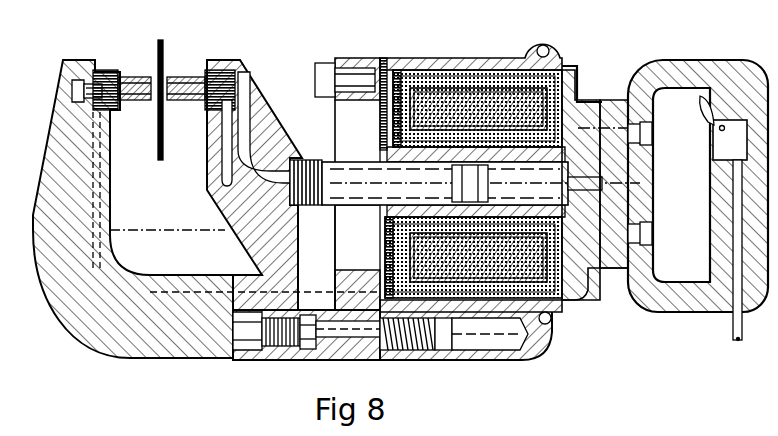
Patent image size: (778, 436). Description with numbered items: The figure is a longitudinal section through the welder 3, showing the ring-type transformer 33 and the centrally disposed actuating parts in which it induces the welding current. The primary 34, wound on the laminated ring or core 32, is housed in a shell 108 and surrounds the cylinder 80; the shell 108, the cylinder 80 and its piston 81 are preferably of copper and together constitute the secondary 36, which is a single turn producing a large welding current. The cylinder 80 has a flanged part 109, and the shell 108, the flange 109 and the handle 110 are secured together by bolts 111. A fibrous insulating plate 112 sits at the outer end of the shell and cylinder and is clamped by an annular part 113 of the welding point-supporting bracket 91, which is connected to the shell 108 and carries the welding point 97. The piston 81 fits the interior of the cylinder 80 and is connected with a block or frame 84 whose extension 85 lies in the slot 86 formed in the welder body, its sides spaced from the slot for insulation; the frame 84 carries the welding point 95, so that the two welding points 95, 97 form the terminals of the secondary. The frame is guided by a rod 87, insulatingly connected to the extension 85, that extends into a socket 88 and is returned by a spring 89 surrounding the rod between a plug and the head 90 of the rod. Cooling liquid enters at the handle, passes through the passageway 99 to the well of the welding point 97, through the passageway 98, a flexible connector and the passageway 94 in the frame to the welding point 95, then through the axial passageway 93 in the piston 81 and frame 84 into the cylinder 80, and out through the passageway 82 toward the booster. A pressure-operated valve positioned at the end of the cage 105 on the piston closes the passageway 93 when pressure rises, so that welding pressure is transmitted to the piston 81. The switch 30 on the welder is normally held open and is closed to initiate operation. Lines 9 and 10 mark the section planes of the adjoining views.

The welder 3 is at (288, 69).
The section line 9- 9 is at (100, 112).
The section line 10- 10 is at (602, 130).
The switch 30 is at (718, 132).
The laminated ring or core 32 is at (424, 92).
The transformer 33 is at (478, 90).
The primary 34 is at (447, 92).
The secondary 36 is at (507, 60).
The cylinder 80 is at (565, 64).
The piston 81 is at (316, 257).
The passageway 82 is at (617, 268).
The block or frame 84 is at (275, 142).
The extension 85 is at (280, 353).
The slot 86 is at (320, 352).
The rod 87 is at (339, 316).
The socket 88 is at (498, 340).
The spring 89 is at (418, 350).
The head 90 is at (446, 350).
The welding point-supporting bracket 91 is at (153, 337).
The passageway 93 is at (246, 106).
The passageway 94 is at (224, 135).
The welding point 95 is at (178, 78).
The welding point 97 is at (145, 78).
The passageway 98 is at (72, 95).
The passageway 99 is at (112, 214).
The cage 105 is at (487, 190).
The shell 108 is at (396, 64).
The flanged part 109 is at (604, 130).
The handle 110 is at (688, 62).
The bolts 111 is at (652, 238).
The insulating plate 112 is at (383, 122).
The annular part 113 is at (356, 70).